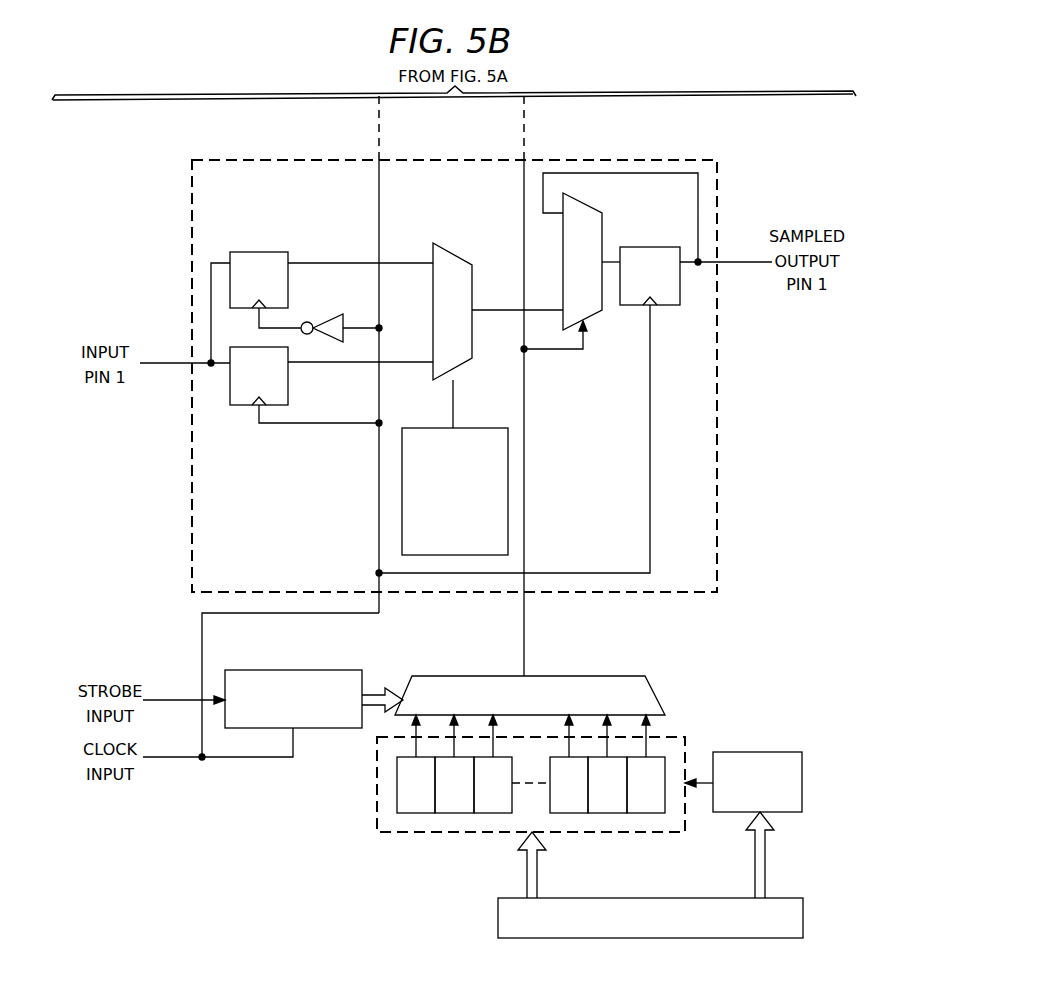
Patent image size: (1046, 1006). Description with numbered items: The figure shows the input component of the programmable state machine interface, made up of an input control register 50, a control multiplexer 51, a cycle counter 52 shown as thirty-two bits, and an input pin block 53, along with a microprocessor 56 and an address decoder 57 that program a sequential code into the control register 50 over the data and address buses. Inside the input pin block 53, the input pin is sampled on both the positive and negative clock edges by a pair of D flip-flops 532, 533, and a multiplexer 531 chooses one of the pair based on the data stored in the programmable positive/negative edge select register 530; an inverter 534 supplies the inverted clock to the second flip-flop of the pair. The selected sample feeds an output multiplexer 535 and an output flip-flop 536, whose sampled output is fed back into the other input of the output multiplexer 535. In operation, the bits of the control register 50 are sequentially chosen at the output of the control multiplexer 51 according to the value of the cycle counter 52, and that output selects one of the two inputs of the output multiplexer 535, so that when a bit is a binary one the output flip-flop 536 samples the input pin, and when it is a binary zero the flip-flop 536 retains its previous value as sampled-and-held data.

The input control register 50 is at (377, 797).
The control multiplexer 51 is at (657, 696).
The cycle counter 52 is at (292, 670).
The input pin block 53 is at (192, 232).
The microprocessor 56 is at (652, 938).
The address decoder 57 is at (757, 752).
The positive/negative edge select register 530 is at (481, 428).
The multiplexer 531 is at (455, 245).
The D flip-flop 532 is at (240, 407).
The D flip-flop 533 is at (258, 252).
The inverter 534 is at (327, 316).
The output multiplexer 535 is at (604, 230).
The output flip-flop 536 is at (672, 306).